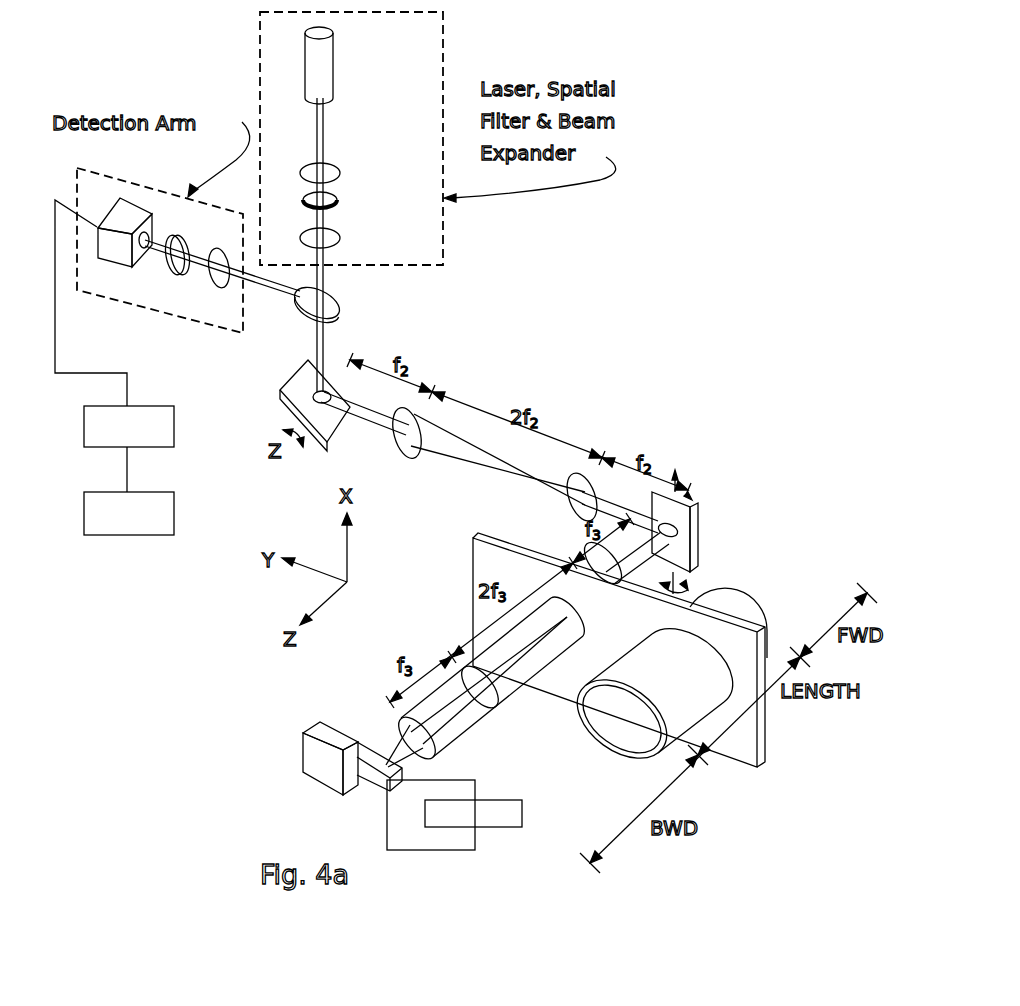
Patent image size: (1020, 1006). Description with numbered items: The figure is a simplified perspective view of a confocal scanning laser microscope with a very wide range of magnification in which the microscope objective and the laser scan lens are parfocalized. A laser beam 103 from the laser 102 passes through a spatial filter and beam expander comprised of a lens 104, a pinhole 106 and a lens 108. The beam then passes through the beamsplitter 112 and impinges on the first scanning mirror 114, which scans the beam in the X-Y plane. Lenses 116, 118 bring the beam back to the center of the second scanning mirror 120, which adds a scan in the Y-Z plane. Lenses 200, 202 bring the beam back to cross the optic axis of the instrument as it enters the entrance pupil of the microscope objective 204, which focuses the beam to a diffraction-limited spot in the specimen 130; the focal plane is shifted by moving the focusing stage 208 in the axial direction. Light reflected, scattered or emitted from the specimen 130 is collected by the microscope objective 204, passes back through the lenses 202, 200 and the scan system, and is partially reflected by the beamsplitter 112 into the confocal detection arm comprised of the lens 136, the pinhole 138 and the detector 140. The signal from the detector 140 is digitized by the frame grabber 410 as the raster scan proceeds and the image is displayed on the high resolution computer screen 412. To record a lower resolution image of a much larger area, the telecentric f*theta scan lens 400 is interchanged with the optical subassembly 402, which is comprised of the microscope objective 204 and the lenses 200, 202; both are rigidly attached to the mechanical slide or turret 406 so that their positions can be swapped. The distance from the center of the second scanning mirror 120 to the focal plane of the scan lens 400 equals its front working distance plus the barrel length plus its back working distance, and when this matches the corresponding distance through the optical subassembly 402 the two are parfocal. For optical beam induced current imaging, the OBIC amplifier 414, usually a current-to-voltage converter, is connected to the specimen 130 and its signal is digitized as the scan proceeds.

The laser 102 is at (335, 80).
The laser beam 103 is at (323, 146).
The lens 104 is at (340, 173).
The pinhole 106 is at (337, 200).
The lens 108 is at (340, 238).
The beamsplitter 112 is at (340, 308).
The first scanning mirror 114 is at (284, 380).
The lens 116 is at (404, 458).
The lens 118 is at (566, 505).
The second scanning mirror 120 is at (703, 540).
The specimen 130 is at (378, 781).
The lens 136 is at (222, 282).
The pinhole 138 is at (183, 269).
The detector 140 is at (130, 268).
The lens 200 is at (595, 556).
The lens 202 is at (480, 712).
The microscope objective 204 is at (400, 730).
The focusing stage 208 is at (303, 750).
The telecentric f*theta scan lens 400 is at (662, 636).
The optical subassembly 402 is at (540, 668).
The mechanical slide or turret 406 is at (763, 767).
The frame grabber 410 is at (174, 425).
The high resolution computer screen 412 is at (174, 512).
The OBIC amplifier 414 is at (500, 795).